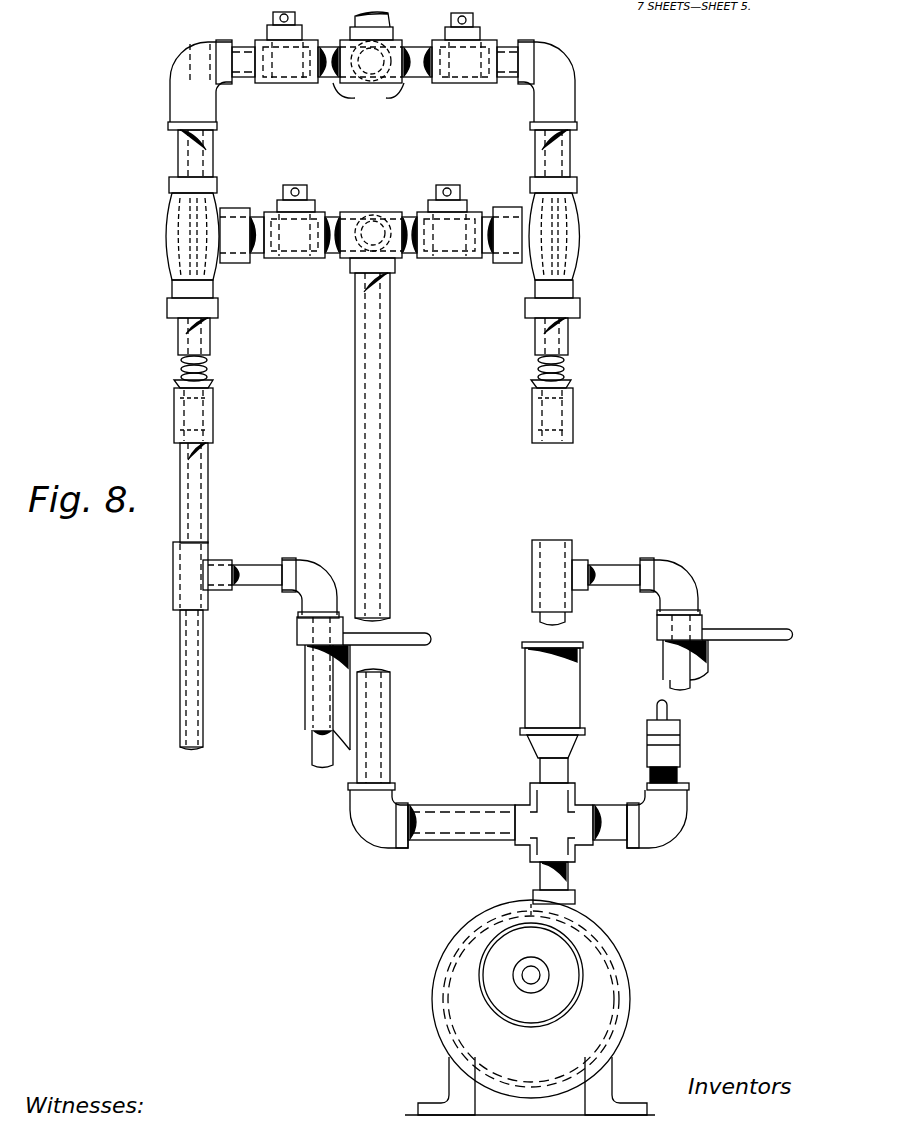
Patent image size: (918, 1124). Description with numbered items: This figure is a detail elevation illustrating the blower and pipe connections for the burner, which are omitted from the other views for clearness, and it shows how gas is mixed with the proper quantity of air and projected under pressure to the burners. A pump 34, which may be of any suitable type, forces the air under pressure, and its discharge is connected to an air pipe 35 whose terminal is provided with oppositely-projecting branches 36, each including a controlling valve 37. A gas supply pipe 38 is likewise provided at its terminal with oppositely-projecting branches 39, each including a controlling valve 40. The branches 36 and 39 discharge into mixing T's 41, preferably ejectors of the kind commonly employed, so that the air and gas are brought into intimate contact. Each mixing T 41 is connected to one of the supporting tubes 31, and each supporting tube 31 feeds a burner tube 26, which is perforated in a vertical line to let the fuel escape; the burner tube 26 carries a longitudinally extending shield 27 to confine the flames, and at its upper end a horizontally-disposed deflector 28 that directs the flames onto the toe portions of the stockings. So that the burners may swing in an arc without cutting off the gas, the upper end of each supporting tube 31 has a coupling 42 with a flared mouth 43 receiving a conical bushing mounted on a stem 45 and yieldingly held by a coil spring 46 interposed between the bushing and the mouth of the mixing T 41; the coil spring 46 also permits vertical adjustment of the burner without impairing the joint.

The burner tube 26 is at (310, 748).
The shield 27 is at (305, 690).
The deflector 28 is at (413, 638).
The supporting tube 31 is at (206, 503).
The pump 34 is at (530, 1007).
The air pipe 35 is at (378, 331).
The branches 36 is at (398, 222).
The controlling valve 37 is at (283, 206).
The gas supply pipe 38 is at (356, 23).
The branches 39 is at (368, 98).
The controlling valve 40 is at (283, 36).
The mixing T 41 is at (164, 242).
The coupling 42 is at (213, 418).
The flared mouth 43 is at (180, 391).
The stem 45 is at (182, 358).
The coil spring 46 is at (207, 369).